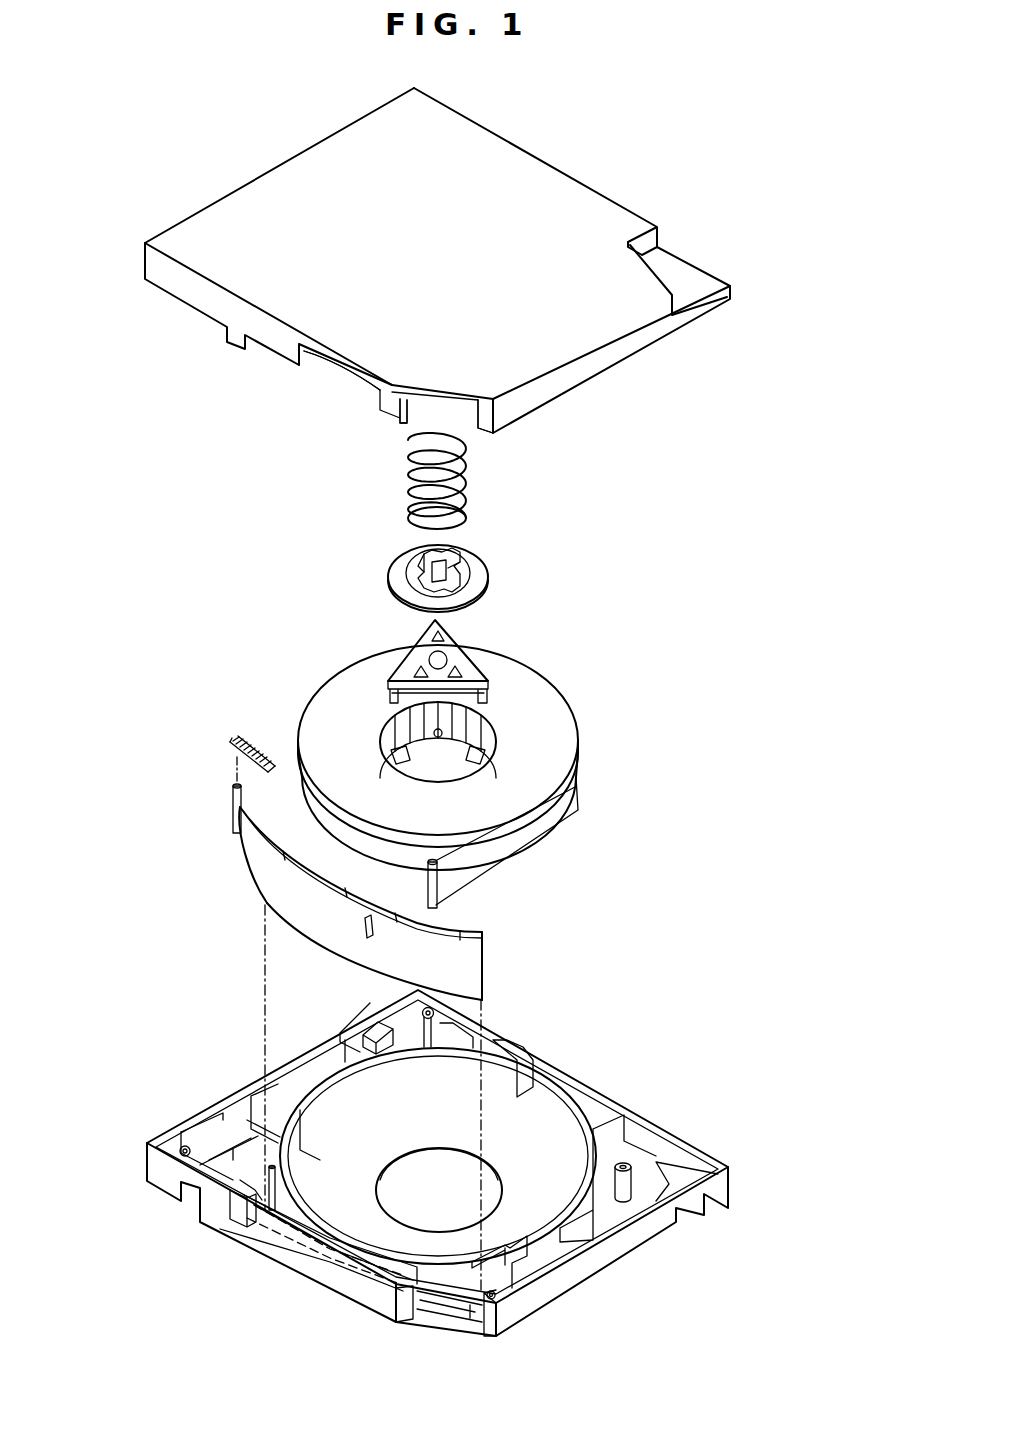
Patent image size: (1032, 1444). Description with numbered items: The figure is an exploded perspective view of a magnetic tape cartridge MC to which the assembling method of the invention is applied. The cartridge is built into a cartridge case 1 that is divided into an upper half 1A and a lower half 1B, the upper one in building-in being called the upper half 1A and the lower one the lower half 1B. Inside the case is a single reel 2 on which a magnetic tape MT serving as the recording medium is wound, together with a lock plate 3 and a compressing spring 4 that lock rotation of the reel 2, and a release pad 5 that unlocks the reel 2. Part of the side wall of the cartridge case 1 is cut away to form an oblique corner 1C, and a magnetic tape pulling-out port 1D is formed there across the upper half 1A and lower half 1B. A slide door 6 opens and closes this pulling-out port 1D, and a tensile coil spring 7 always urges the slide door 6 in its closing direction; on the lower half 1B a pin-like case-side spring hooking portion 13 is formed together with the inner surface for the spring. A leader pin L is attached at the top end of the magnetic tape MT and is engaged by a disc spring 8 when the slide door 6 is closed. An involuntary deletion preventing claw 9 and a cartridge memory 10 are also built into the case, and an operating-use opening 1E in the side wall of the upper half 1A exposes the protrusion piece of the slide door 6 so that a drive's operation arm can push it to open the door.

The magnetic tape cartridge MC is at (775, 187).
The cartridge case 1 is at (818, 672).
The upper half 1A is at (615, 353).
The lower half 1B is at (722, 1186).
The corner 1C is at (484, 415).
The magnetic tape pulling-out port 1D is at (471, 427).
The operating-use opening 1E is at (311, 366).
The reel 2 is at (547, 702).
The lock plate 3 is at (397, 573).
The compressing spring 4 is at (405, 502).
The release pad 5 is at (405, 673).
The slide door 6 is at (240, 862).
The tensile coil spring 7 is at (257, 737).
The disc spring 8 is at (518, 1263).
The involuntary deletion preventing claw 9 is at (378, 1025).
The cartridge memory 10 is at (212, 1142).
The case-side spring hooking portion 13 is at (228, 1207).
The magnetic tape MT is at (545, 822).
The leader pin L is at (442, 908).